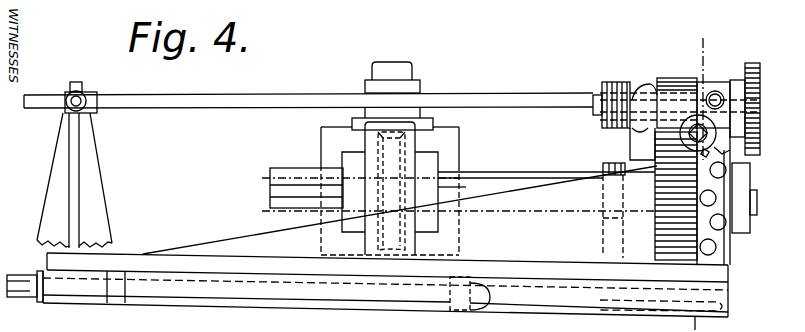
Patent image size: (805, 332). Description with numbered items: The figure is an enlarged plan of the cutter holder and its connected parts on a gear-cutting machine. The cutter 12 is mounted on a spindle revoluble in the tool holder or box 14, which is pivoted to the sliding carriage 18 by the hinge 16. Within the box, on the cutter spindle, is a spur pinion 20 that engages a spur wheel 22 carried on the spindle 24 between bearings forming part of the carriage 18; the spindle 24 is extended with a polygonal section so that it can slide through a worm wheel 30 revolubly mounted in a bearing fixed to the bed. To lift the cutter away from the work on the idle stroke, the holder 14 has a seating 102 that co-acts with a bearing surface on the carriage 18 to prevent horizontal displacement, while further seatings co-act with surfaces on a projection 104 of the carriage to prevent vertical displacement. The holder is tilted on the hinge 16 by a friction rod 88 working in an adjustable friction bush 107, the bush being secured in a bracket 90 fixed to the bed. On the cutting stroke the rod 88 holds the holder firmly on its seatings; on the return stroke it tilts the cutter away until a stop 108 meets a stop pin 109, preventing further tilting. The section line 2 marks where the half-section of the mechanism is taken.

The section line 2 is at (720, 90).
The cutter 12 is at (755, 130).
The tool holder 14 is at (638, 88).
The hinge 16 is at (705, 133).
The sliding carriage 18 is at (367, 248).
The spur pinion 20 is at (680, 76).
The spur wheel 22 is at (655, 244).
The spindle 24 is at (277, 178).
The worm wheel 30 is at (408, 152).
The friction rod 88 is at (265, 99).
The bracket 90 is at (93, 187).
The seating 102 is at (641, 133).
The projection 104 is at (735, 150).
The friction bush 107 is at (90, 97).
The stop 108 is at (723, 160).
The stop pin 109 is at (642, 180).